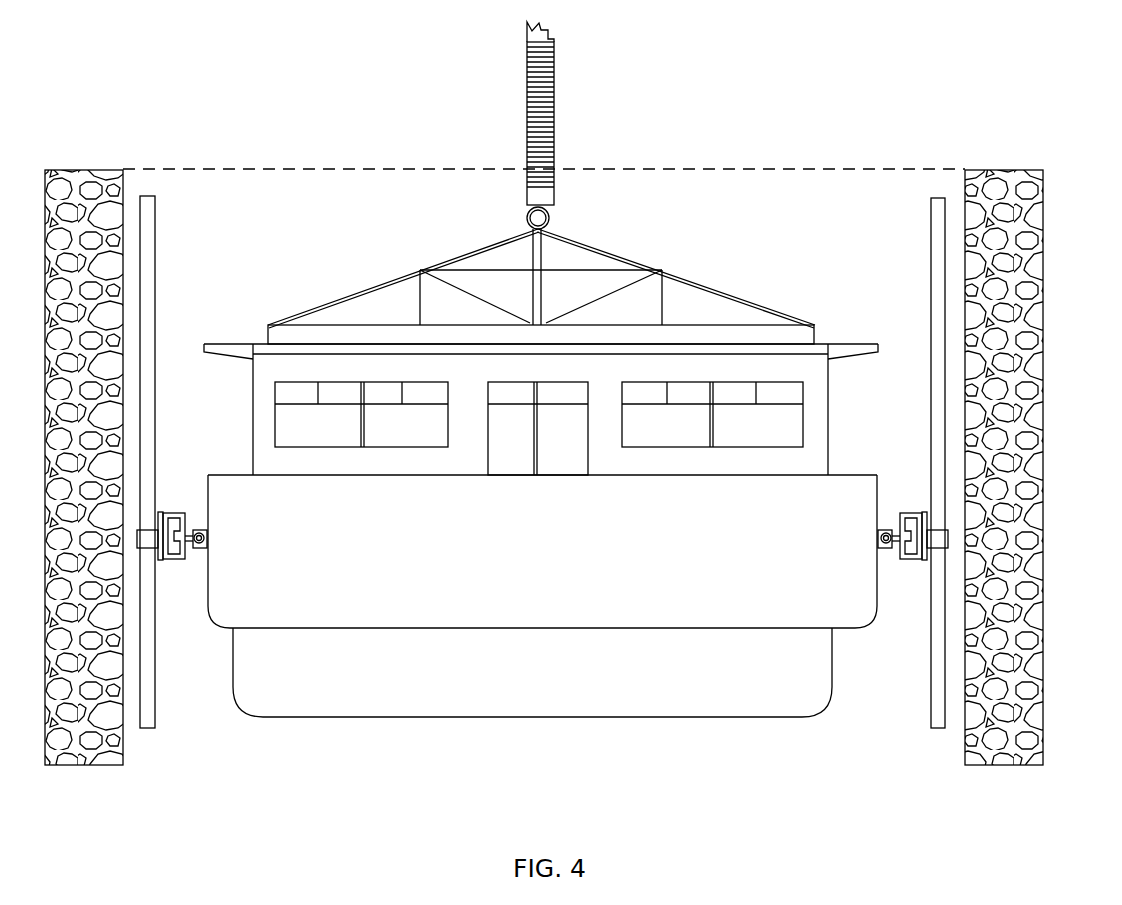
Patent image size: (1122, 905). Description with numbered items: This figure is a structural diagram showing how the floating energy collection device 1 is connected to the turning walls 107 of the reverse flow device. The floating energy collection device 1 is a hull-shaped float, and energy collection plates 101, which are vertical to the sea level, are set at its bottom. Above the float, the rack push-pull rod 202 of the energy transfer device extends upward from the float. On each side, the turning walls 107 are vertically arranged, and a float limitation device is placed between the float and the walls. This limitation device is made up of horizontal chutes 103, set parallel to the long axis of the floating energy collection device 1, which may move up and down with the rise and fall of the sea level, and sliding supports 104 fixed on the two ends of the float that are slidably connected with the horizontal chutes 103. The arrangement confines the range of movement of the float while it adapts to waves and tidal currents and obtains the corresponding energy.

The floating energy collection device 1 is at (541, 353).
The energy collection plate 101 is at (675, 624).
The horizontal chute 103 is at (1009, 453).
The sliding support 104 is at (998, 492).
The turning wall 107 is at (1040, 467).
The rack push-pull rod 202 is at (586, 125).